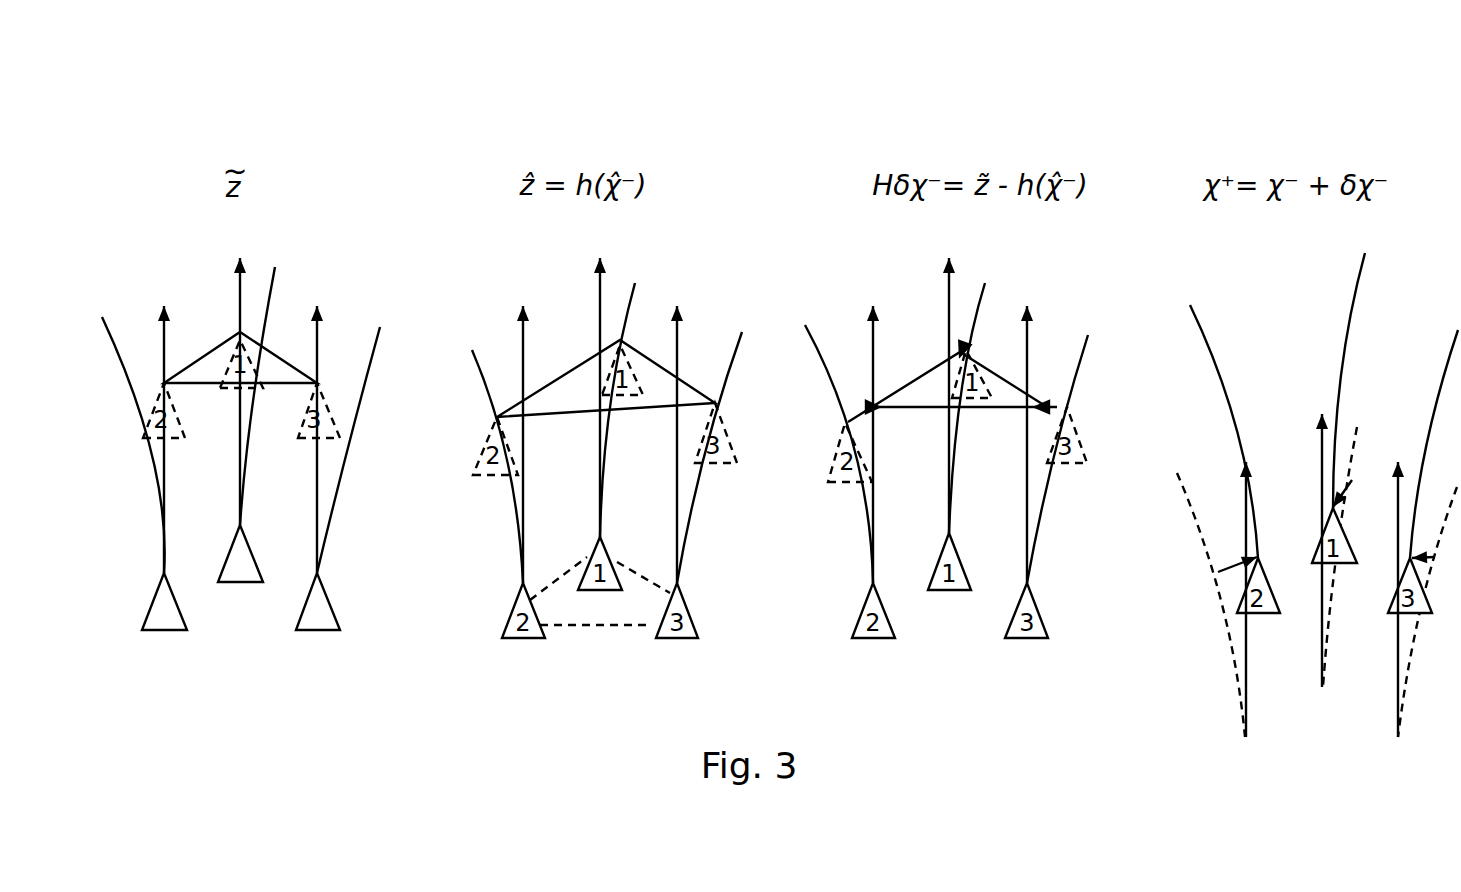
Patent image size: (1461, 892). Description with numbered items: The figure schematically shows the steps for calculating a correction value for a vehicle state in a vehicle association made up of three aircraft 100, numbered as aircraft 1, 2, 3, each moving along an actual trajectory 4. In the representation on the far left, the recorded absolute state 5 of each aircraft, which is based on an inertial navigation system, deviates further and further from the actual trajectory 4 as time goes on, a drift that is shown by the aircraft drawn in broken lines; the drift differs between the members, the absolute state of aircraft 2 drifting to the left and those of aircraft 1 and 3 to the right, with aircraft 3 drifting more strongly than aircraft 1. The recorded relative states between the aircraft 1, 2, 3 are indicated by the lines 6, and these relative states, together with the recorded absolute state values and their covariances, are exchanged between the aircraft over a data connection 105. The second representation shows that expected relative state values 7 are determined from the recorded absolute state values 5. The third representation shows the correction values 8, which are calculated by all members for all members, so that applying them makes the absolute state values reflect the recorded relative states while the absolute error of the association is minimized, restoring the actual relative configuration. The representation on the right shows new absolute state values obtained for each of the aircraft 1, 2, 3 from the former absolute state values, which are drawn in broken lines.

The aircraft 1 is at (240, 553).
The aircraft 2 is at (164, 601).
The aircraft 3 is at (318, 601).
The actual trajectory 4 is at (185, 313).
The recorded absolute state 5 is at (113, 340).
The lines indicating recorded relative states 6 is at (208, 352).
The expected relative state values 7 is at (565, 370).
The correction values 8 is at (870, 483).
The aircraft 100 is at (250, 624).
The data connection 105 is at (562, 577).